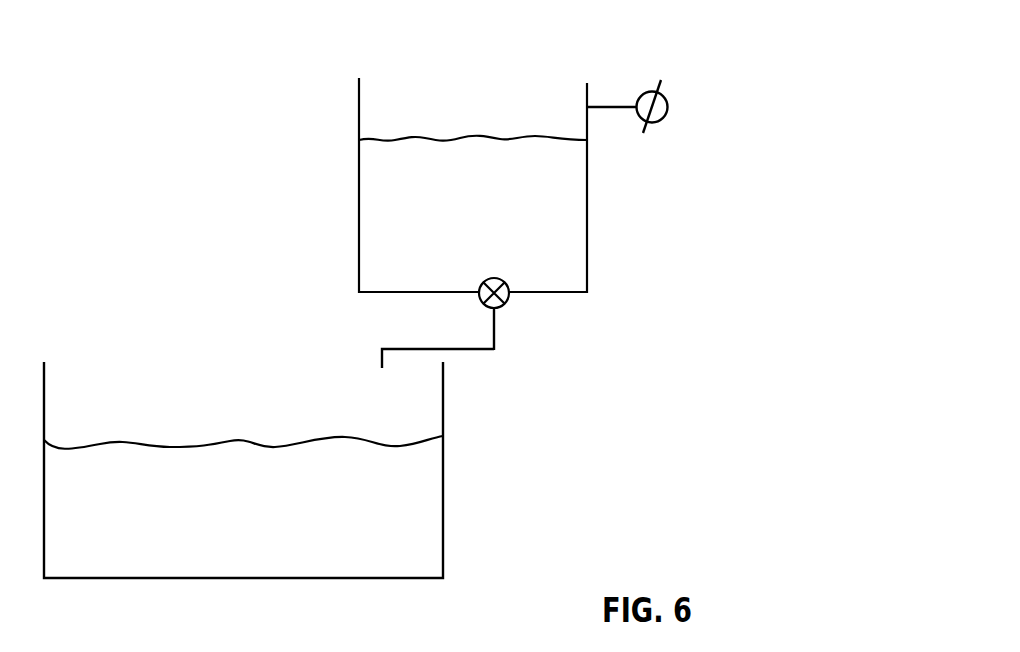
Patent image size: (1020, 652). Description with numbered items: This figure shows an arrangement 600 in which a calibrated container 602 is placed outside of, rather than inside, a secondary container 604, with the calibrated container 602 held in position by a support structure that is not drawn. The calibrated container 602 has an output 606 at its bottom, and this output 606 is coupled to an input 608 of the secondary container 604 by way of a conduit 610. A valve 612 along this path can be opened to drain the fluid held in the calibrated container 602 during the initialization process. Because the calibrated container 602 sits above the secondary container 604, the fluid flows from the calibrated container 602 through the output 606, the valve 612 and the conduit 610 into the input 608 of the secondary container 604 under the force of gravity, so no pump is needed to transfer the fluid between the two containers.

The arrangement 600 is at (724, 58).
The calibrated container 602 is at (587, 192).
The secondary container 604 is at (443, 508).
The output 606 is at (493, 278).
The input 608 is at (263, 406).
The conduit 610 is at (477, 352).
The valve 612 is at (492, 310).